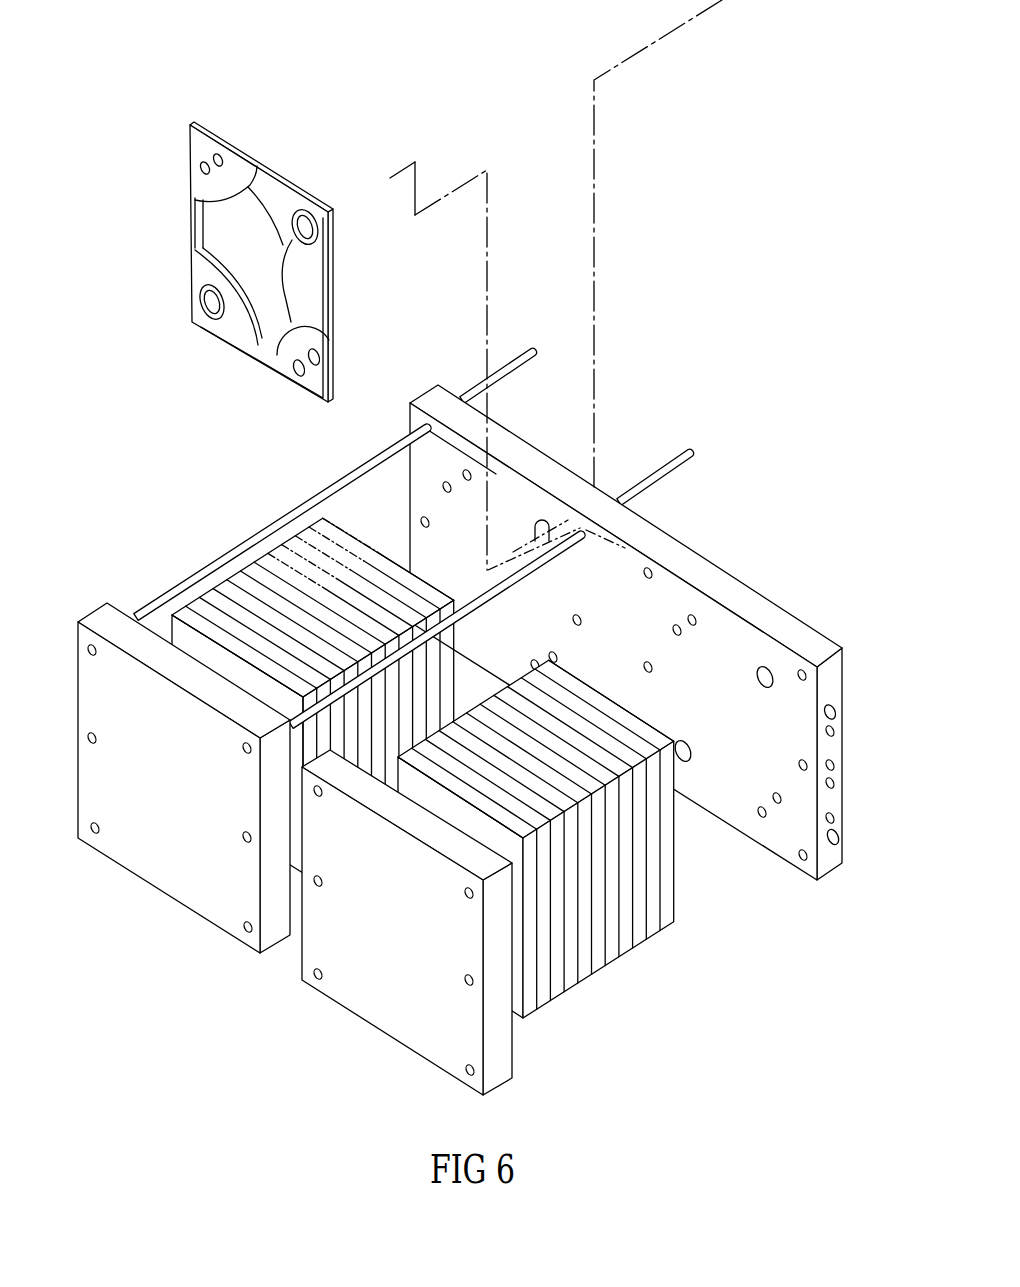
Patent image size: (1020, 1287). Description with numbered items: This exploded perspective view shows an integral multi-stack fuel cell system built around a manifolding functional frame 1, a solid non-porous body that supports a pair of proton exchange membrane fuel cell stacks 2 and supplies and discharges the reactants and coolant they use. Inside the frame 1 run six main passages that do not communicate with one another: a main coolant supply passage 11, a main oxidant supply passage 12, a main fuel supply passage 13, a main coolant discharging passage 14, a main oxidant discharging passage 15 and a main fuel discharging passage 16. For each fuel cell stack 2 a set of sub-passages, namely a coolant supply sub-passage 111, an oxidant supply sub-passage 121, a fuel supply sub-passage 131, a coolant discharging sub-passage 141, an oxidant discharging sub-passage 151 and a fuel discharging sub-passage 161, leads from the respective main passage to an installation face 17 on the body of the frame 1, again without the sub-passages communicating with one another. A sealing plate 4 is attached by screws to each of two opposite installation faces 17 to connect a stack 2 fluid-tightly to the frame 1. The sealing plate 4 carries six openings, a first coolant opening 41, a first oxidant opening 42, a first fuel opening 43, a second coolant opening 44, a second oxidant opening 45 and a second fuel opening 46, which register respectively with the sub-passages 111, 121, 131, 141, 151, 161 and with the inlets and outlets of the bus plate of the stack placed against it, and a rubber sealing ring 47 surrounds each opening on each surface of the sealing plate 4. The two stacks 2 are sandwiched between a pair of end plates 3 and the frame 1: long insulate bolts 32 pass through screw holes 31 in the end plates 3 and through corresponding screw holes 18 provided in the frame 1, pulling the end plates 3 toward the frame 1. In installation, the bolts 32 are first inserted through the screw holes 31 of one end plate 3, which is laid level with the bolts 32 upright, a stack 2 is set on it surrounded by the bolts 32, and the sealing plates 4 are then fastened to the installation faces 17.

The manifolding functional frame 1 is at (666, 655).
The main coolant supply passage 11 is at (836, 712).
The main oxidant supply passage 12 is at (836, 732).
The main fuel supply passage 13 is at (836, 766).
The main coolant discharging passage 14 is at (838, 838).
The main oxidant discharging passage 15 is at (836, 819).
The main fuel discharging passage 16 is at (836, 785).
The installation face 17 is at (575, 518).
The screw hole 18 is at (649, 567).
The coolant supply sub-passage 111 is at (771, 674).
The oxidant supply sub-passage 121 is at (697, 620).
The fuel supply sub-passage 131 is at (680, 634).
The coolant discharging sub-passage 141 is at (687, 748).
The oxidant discharging sub-passage 151 is at (760, 815).
The fuel discharging sub-passage 161 is at (778, 792).
The fuel cell stack 2 is at (253, 535).
The end plate 3 is at (266, 849).
The screw hole 31 is at (90, 738).
The long insulate bolt 32 is at (172, 592).
The sealing plate 4 is at (260, 271).
The first coolant opening 41 is at (320, 239).
The first oxidant opening 42 is at (217, 151).
The first fuel opening 43 is at (200, 161).
The second coolant opening 44 is at (208, 304).
The second oxidant opening 45 is at (298, 377).
The second fuel opening 46 is at (319, 349).
The rubber sealing ring 47 is at (284, 236).